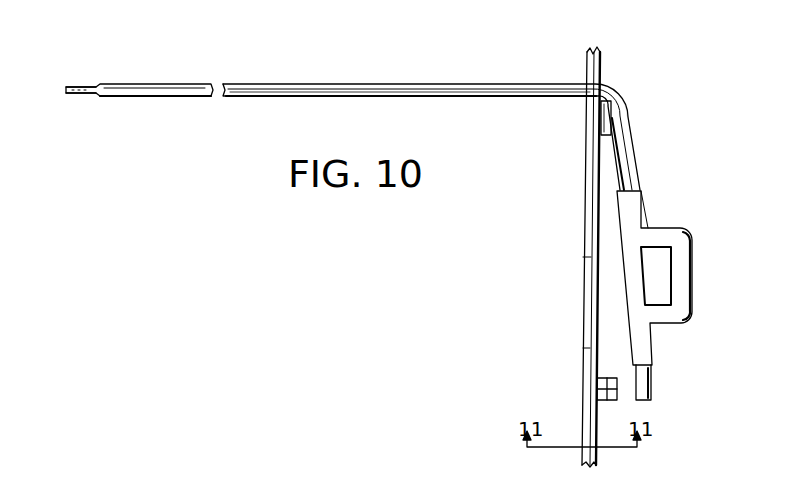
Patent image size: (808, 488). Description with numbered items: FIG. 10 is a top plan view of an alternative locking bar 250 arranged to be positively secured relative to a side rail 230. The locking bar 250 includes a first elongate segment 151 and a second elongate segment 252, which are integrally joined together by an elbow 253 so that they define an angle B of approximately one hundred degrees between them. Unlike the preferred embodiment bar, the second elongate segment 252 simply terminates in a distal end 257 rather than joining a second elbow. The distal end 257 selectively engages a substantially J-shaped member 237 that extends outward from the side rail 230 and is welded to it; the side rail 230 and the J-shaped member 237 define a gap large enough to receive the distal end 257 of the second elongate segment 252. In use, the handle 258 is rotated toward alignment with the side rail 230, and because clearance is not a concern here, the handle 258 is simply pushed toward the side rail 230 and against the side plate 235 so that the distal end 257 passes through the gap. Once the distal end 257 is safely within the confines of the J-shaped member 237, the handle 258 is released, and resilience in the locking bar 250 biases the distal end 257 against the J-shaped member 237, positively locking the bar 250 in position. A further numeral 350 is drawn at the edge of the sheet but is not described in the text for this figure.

The locking bar 250 is at (337, 82).
The first elongate segment 151 is at (394, 100).
The side rail 230 is at (582, 300).
The side plate 235 is at (605, 122).
The elbow 253 is at (619, 82).
The second elongate segment 252 is at (637, 158).
The handle 258 is at (690, 258).
The distal end 257 is at (650, 388).
The J-shaped member 237 is at (624, 398).
The angle B is at (580, 91).
The member 350 is at (265, 487).